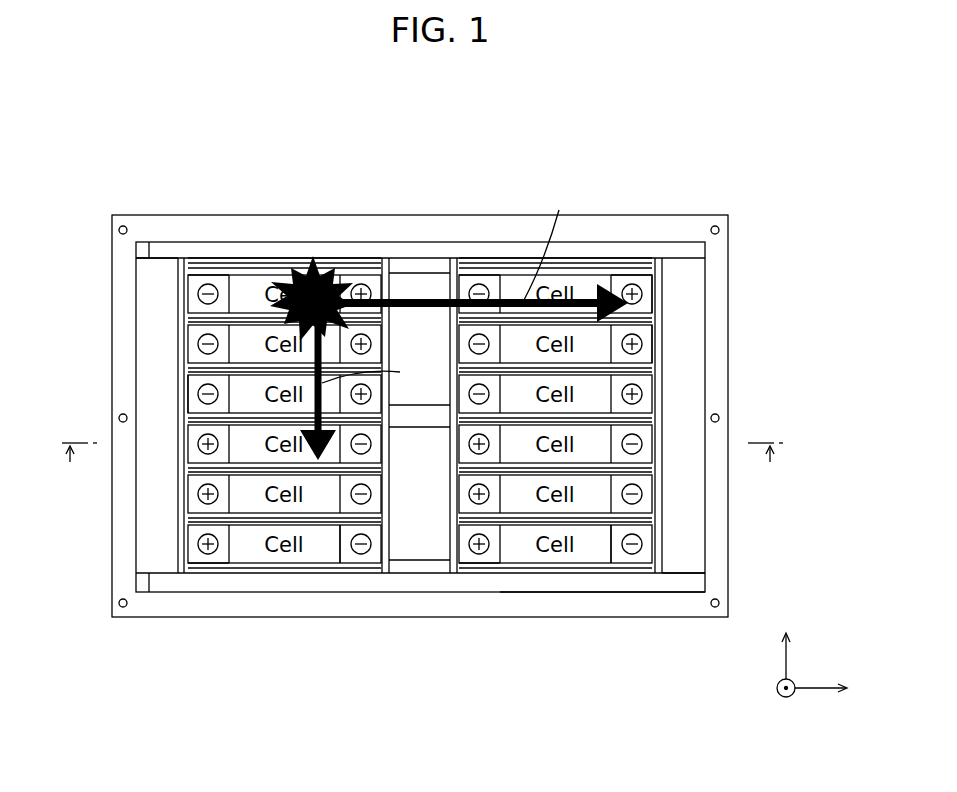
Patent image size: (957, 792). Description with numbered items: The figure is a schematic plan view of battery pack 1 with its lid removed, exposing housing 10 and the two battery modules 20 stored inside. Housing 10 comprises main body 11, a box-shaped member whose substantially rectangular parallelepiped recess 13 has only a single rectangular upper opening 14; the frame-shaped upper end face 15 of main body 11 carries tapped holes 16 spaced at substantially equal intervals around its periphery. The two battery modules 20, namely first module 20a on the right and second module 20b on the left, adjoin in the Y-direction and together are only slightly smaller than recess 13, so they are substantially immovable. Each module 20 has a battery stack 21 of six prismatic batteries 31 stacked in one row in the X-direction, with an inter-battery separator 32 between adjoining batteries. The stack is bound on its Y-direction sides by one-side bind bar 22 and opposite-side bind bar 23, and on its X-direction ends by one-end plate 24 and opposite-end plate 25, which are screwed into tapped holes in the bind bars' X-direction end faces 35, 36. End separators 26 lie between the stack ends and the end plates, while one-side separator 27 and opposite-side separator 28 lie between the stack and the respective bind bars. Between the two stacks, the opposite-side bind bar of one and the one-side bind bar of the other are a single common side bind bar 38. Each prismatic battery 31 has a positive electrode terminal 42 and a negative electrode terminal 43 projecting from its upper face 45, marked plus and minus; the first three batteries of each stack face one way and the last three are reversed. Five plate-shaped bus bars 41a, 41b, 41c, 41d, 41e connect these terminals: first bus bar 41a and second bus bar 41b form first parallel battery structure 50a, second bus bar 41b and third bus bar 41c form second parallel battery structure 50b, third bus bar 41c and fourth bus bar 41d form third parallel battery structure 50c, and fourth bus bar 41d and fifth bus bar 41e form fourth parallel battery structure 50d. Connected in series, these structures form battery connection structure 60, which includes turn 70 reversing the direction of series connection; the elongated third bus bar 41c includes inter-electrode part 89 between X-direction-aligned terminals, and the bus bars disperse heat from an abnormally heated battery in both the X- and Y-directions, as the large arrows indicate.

The battery pack 1 is at (507, 181).
The housing 10 is at (742, 348).
The main body 11 is at (716, 283).
The recess 13 is at (168, 257).
The upper opening 14 is at (408, 284).
The upper end face 15 is at (652, 232).
The tapped holes 16 is at (724, 230).
The battery module 20 is at (282, 240).
The first module 20a is at (572, 236).
The second module 20b is at (260, 238).
The battery stack 21 is at (238, 283).
The one-side bind bar 22 is at (146, 365).
The opposite-side bind bar 23 is at (425, 287).
The one-end plate 24 is at (345, 254).
The opposite-end plate 25 is at (372, 584).
The end separator 26 is at (306, 573).
The one-side separator 27 is at (181, 576).
The opposite-side separator 28 is at (388, 577).
The prismatic battery 31 is at (240, 328).
The inter-battery separator 32 is at (243, 519).
The X-direction end face 35 is at (148, 248).
The X-direction end face 36 is at (150, 578).
The common side bind bar 38 is at (440, 566).
The first bus bar 41a is at (646, 353).
The second bus bar 41b is at (404, 285).
The third bus bar 41c is at (199, 397).
The fourth bus bar 41d is at (339, 545).
The fifth bus bar 41e is at (626, 545).
The positive electrode terminal 42 is at (643, 278).
The negative electrode terminal 43 is at (481, 277).
The upper face 45 is at (592, 278).
The first parallel battery structure 50a is at (646, 303).
The second parallel battery structure 50b is at (255, 287).
The third parallel battery structure 50c is at (254, 543).
The fourth parallel battery structure 50d is at (522, 546).
The battery connection structure 60 is at (650, 598).
The turn 70 is at (565, 600).
The inter-electrode part 89 is at (205, 417).